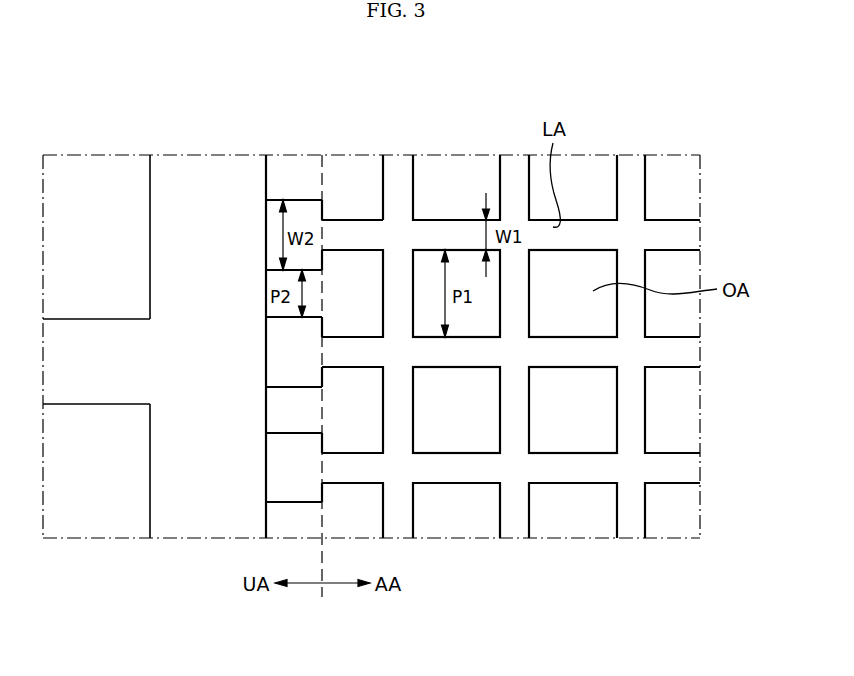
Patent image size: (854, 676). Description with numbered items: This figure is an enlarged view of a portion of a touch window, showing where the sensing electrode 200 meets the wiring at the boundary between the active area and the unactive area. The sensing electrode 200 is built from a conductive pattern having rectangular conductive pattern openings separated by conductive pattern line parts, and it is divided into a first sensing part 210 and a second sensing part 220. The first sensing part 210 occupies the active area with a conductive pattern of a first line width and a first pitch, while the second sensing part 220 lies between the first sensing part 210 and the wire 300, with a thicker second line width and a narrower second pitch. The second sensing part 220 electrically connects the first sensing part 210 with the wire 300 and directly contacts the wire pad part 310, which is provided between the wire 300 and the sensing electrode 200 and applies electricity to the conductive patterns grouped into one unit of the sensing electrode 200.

The sensing electrode 200 is at (483, 305).
The first sensing part 210 is at (511, 326).
The second sensing part 220 is at (300, 213).
The wire 300 is at (88, 328).
The wire pad part 310 is at (213, 170).